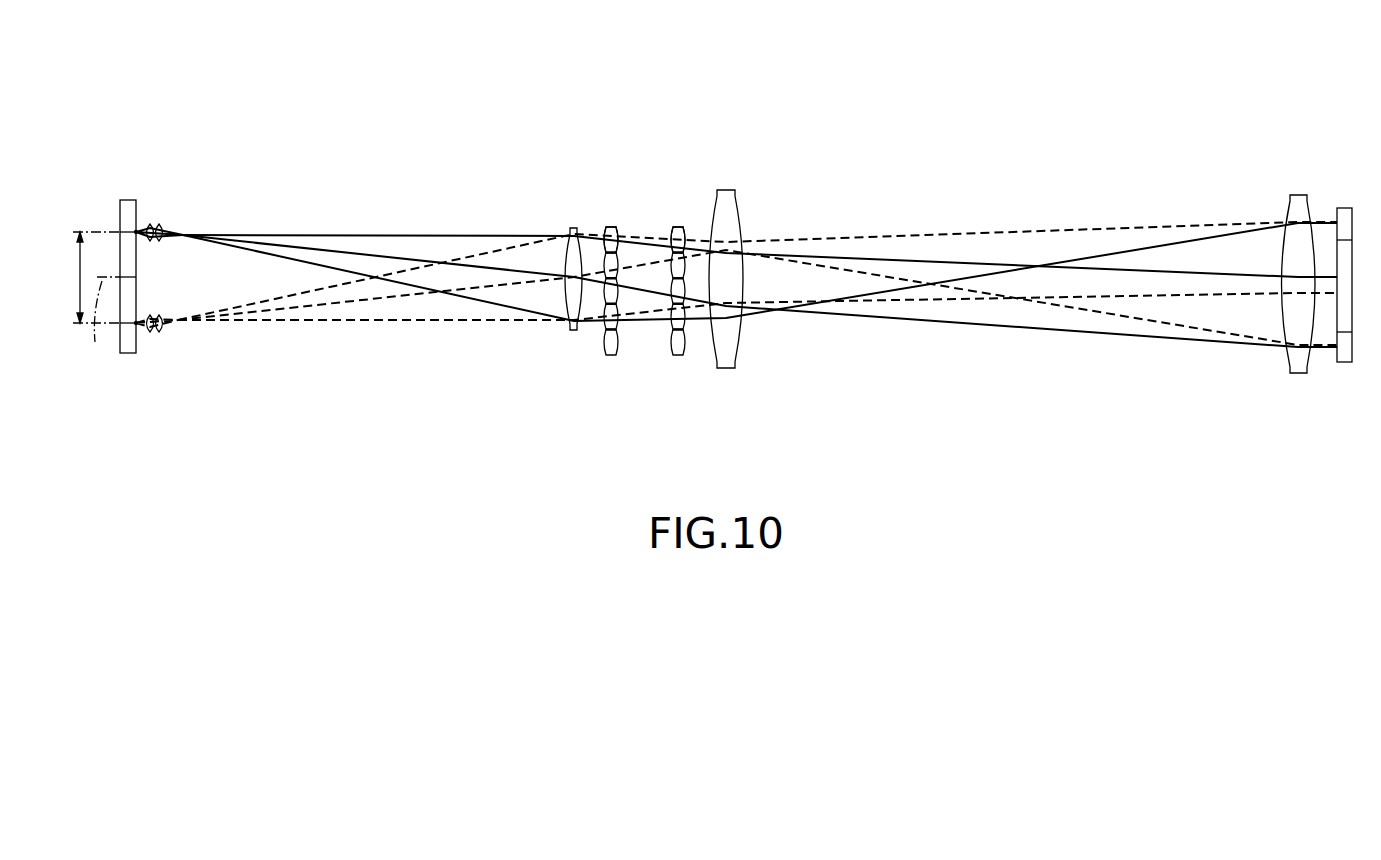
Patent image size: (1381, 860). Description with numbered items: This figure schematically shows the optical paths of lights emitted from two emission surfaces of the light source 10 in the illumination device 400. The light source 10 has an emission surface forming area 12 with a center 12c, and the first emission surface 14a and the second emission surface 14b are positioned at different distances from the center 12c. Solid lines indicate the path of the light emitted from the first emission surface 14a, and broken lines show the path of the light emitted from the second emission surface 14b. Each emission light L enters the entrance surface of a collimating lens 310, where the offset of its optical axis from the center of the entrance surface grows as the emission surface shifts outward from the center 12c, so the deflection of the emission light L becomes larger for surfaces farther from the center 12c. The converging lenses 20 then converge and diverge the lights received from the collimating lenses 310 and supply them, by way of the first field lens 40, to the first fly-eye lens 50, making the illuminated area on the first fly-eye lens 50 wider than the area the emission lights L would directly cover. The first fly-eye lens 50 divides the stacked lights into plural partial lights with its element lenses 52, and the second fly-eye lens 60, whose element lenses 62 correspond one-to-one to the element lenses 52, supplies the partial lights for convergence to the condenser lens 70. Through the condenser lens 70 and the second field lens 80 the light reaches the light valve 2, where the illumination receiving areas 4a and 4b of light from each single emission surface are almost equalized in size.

The illumination device 400 is at (1317, 73).
The light source 10 is at (128, 206).
The first emission surface 14a is at (134, 232).
The second emission surface 14b is at (134, 326).
The emission surface forming area 12 is at (88, 277).
The center of the emission surface forming area 12c is at (88, 324).
The collimating lens 310 is at (150, 223).
The converging lens 20 is at (160, 223).
The emission light L is at (147, 350).
The first field lens 40 is at (574, 227).
The first fly-eye lens 50 is at (609, 226).
The element lens 52 is at (618, 227).
The second fly-eye lens 60 is at (676, 226).
The element lens 62 is at (684, 226).
The condenser lens 70 is at (733, 213).
The second field lens 80 is at (1300, 200).
The light valve 2 is at (1343, 208).
The illumination receiving area 4a is at (1337, 240).
The illumination receiving area 4b is at (1337, 332).